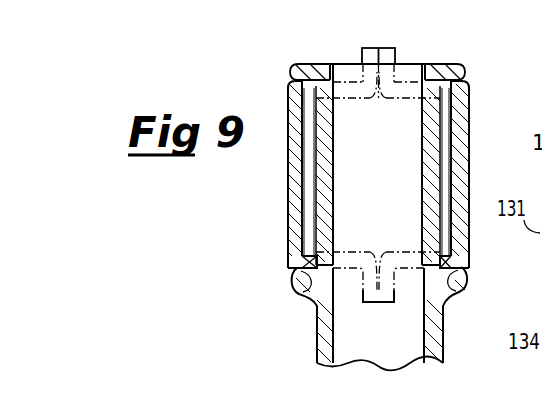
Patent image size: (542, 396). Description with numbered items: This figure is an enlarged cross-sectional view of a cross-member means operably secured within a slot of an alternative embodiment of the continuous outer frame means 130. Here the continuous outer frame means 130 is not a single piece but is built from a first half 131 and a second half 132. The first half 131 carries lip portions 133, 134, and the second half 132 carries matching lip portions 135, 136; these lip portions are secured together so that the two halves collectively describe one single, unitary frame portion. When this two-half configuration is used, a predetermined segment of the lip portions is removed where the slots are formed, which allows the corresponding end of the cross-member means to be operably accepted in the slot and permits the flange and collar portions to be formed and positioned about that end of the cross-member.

The continuous outer frame means 130 is at (472, 114).
The first half 131 is at (287, 200).
The second half 132 is at (473, 237).
The lip portion 133 is at (361, 52).
The lip portion 134 is at (366, 292).
The lip portion 135 is at (387, 53).
The lip portion 136 is at (393, 300).